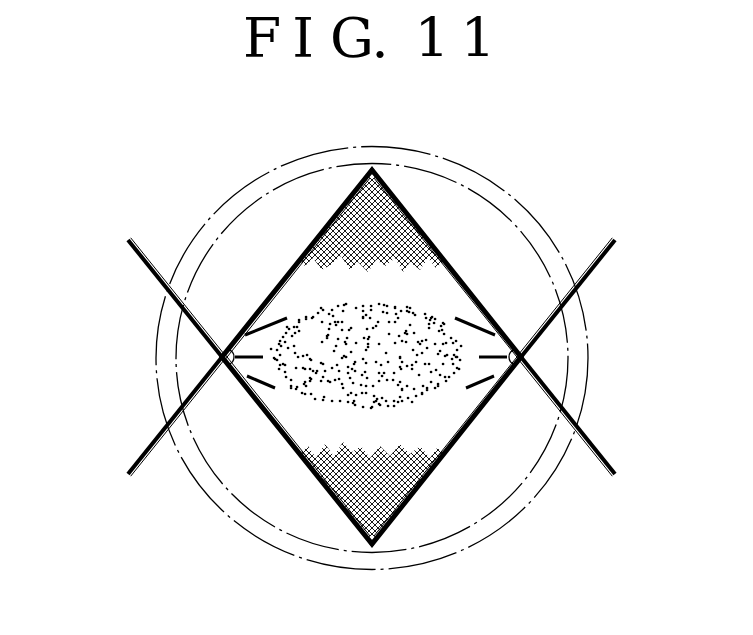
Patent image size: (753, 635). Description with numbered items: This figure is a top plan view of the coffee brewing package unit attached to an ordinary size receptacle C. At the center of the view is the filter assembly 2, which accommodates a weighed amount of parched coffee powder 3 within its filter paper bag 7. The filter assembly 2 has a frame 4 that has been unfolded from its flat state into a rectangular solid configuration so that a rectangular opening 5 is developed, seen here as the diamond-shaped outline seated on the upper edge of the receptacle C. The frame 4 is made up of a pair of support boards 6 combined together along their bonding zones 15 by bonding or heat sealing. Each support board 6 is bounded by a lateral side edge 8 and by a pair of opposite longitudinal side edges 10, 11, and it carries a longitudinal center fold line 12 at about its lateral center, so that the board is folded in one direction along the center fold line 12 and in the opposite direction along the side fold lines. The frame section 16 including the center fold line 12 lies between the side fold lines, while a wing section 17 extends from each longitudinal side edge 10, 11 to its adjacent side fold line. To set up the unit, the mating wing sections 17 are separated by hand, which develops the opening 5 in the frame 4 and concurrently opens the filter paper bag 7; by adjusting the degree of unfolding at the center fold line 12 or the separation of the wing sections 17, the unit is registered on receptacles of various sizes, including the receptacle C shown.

The filter assembly 2 is at (452, 238).
The parched coffee powder 3 is at (322, 333).
The frame 4 is at (275, 265).
The rectangular opening 5 is at (325, 444).
The support board 6 is at (484, 288).
The filter paper bag 7 is at (422, 450).
The lateral side edge 8 is at (305, 255).
The longitudinal side edge 10 is at (128, 240).
The longitudinal side edge 11 is at (613, 243).
The longitudinal center fold line 12 is at (374, 170).
The bonding zone 15 is at (222, 357).
The frame section 16 is at (336, 205).
The wing section 17 is at (162, 283).
The receptacle c is at (230, 530).